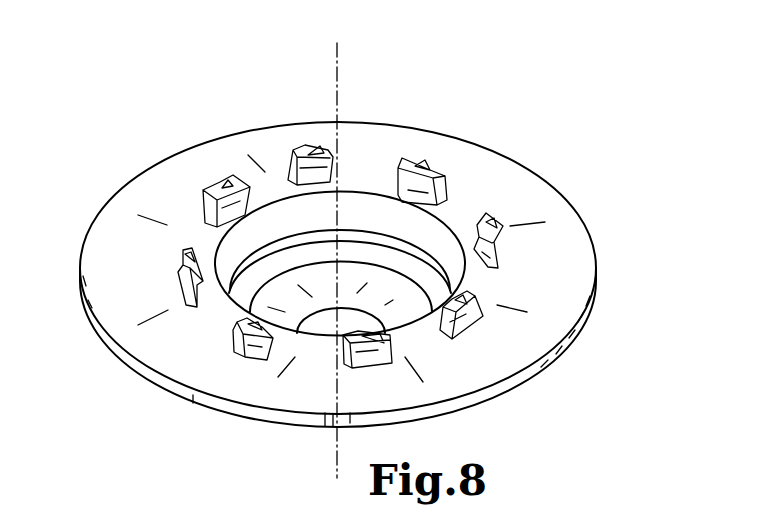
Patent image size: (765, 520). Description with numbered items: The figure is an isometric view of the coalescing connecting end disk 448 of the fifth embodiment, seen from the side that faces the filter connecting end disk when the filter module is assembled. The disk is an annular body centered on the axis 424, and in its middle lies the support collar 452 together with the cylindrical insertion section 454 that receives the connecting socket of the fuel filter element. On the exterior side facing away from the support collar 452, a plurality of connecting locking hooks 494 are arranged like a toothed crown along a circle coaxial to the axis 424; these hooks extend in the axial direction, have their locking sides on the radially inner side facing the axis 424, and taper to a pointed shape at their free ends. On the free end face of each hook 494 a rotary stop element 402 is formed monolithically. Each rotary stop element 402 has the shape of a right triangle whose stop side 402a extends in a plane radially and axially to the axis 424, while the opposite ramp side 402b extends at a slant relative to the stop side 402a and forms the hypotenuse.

The coalescing connecting end disk 448 is at (200, 116).
The axis 424 is at (322, 67).
The rotary stop element 402 is at (220, 179).
The stop side 402a is at (330, 151).
The ramp side 402b is at (311, 146).
The cylindrical insertion section 454 is at (432, 239).
The support collar 452 is at (404, 303).
The connecting locking hook 494 is at (475, 320).